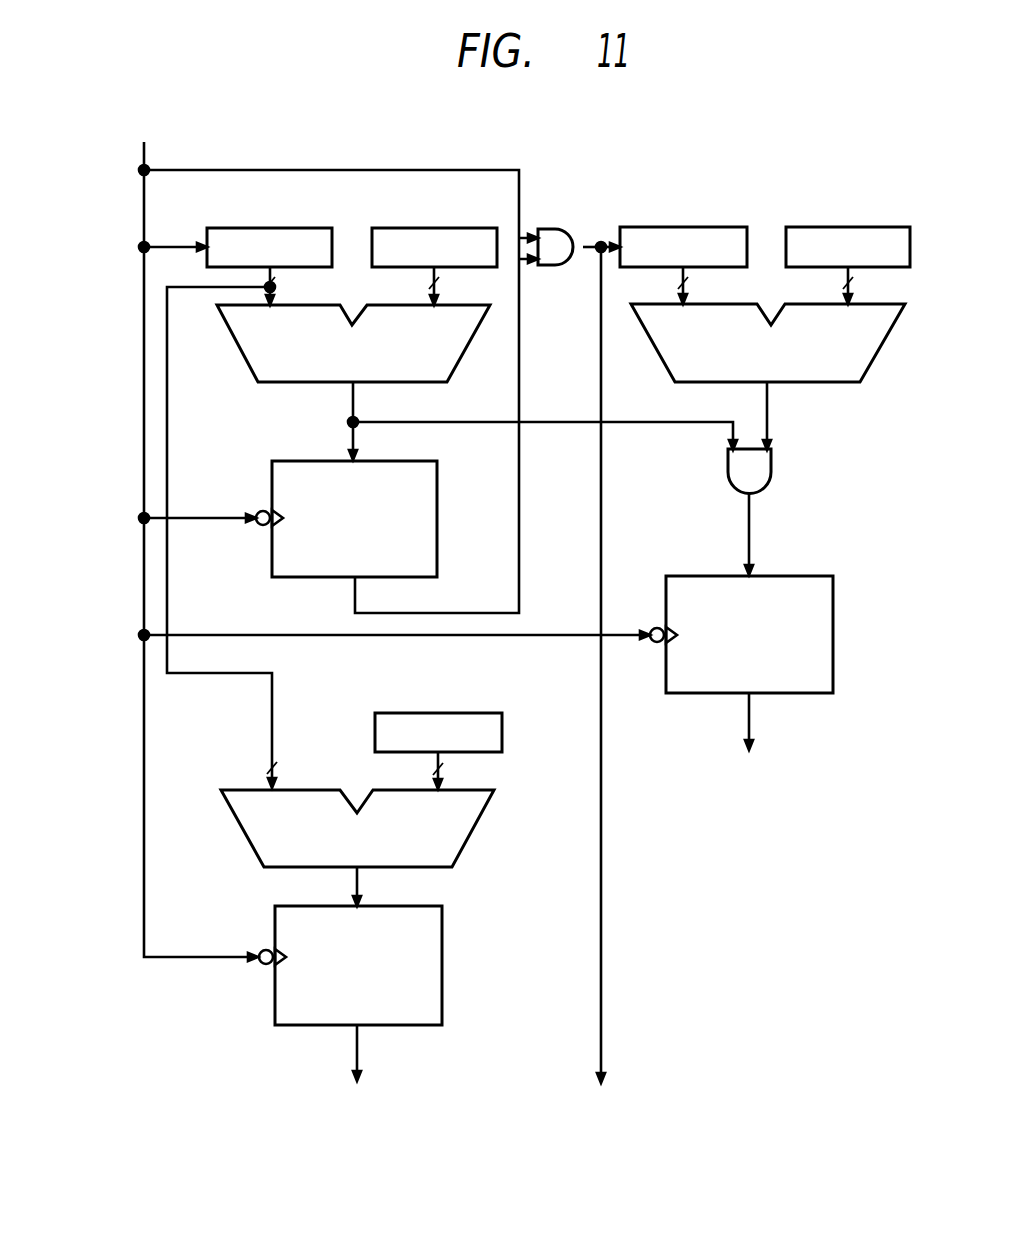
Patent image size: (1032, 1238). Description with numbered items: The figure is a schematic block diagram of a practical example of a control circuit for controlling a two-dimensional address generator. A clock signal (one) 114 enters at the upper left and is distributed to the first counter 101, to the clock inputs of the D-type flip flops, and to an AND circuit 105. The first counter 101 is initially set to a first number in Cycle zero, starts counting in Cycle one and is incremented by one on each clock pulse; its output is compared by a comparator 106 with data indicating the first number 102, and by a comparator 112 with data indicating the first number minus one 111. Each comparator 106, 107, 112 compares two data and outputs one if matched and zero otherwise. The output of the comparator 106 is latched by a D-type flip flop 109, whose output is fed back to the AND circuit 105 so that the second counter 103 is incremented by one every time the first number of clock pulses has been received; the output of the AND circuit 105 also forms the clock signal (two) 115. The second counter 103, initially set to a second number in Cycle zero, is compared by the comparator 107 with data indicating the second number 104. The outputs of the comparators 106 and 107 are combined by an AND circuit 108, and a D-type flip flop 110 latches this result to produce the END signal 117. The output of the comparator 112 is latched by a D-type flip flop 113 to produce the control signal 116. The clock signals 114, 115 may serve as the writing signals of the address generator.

The Counter 1 101 is at (318, 227).
The data indicating P1 102 is at (472, 227).
The Counter 2 103 is at (725, 227).
The data indicating P2 104 is at (890, 227).
The AND circuit 105 is at (565, 227).
The comparator 106 is at (447, 372).
The comparator 107 is at (868, 372).
The AND circuit 108 is at (771, 468).
The D-type flip flop 109 is at (437, 492).
The D-type flip flop 110 is at (833, 607).
The data indicating (P1-1) 111 is at (478, 712).
The comparator 112 is at (457, 852).
The D-type flip flop 113 is at (442, 932).
The clock signal (1) 114 is at (348, 527).
The clock signal (2) 115 is at (647, 682).
The control signal 116 is at (373, 1070).
The END signal 117 is at (756, 738).